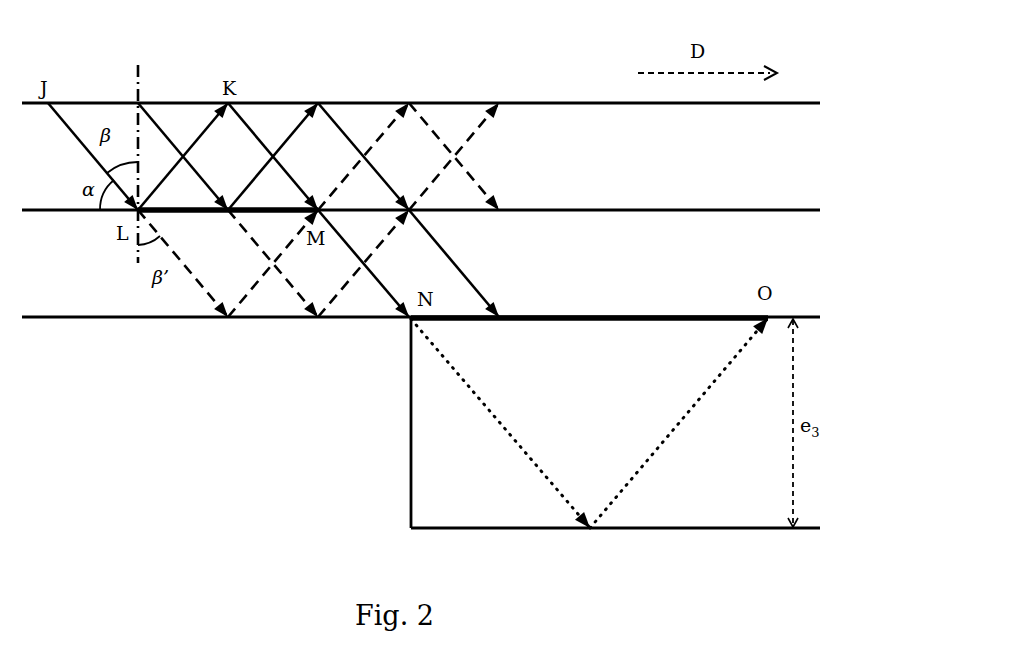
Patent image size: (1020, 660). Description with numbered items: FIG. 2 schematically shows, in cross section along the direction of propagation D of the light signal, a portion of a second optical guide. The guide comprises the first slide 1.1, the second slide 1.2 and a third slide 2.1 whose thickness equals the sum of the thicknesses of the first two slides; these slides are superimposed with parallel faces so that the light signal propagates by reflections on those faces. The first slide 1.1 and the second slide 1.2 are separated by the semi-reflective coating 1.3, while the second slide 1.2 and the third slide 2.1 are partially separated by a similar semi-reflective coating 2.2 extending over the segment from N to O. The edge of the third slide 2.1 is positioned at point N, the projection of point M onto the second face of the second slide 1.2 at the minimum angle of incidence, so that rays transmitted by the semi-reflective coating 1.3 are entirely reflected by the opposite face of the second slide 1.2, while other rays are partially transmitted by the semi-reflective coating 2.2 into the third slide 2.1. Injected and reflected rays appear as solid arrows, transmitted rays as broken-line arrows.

The first slide 1.1 is at (595, 104).
The second slide 1.2 is at (70, 313).
The semi-reflective coating 1.3 is at (200, 214).
The third slide 2.1 is at (409, 407).
The semi-reflective coating 2.2 is at (610, 321).